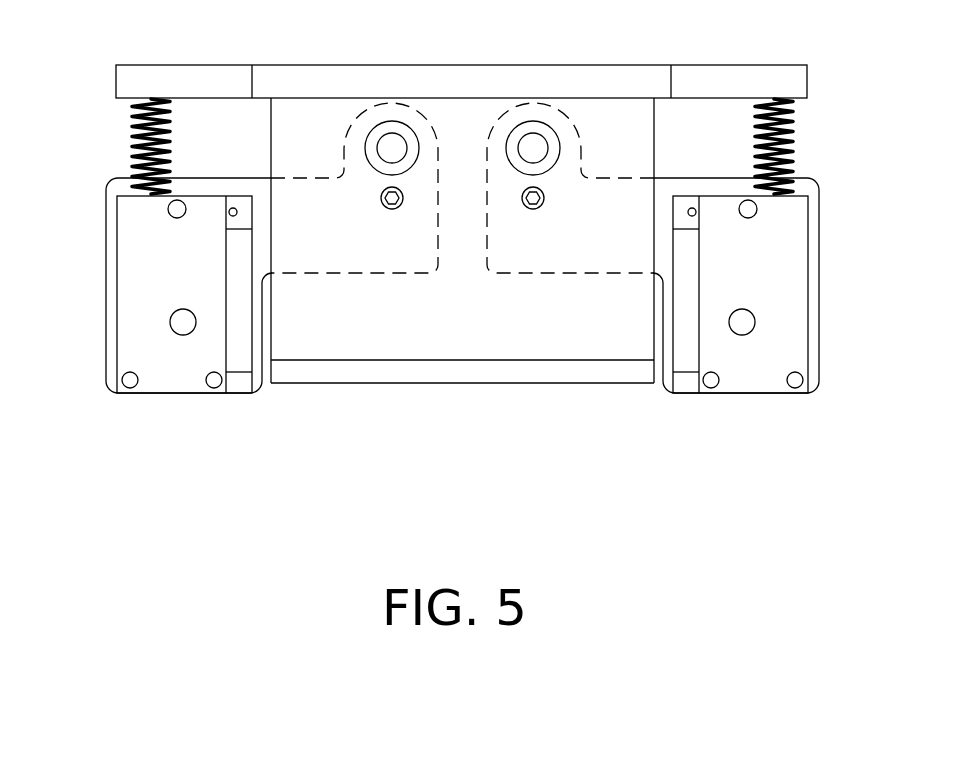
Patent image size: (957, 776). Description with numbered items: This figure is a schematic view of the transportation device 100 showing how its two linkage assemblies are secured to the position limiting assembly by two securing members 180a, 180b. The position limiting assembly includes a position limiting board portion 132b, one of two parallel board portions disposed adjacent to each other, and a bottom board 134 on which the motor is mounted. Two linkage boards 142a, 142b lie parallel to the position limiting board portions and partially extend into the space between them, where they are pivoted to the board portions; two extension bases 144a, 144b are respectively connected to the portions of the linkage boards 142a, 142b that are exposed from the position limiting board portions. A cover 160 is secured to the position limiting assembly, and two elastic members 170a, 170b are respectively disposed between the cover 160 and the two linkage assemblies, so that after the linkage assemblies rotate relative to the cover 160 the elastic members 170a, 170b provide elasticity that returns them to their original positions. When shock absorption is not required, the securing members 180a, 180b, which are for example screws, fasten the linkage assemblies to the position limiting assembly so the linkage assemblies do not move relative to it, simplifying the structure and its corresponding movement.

The transportation device 100 is at (113, 497).
The position limiting board portion 132b is at (304, 115).
The bottom board 134 is at (432, 368).
The linkage board 142a is at (110, 253).
The linkage board 142b is at (813, 255).
The extension base 144a is at (169, 362).
The extension base 144b is at (765, 360).
The cover 160 is at (592, 88).
The elastic member 170a is at (130, 138).
The elastic member 170b is at (795, 128).
The securing member 180a is at (402, 198).
The securing member 180b is at (522, 198).